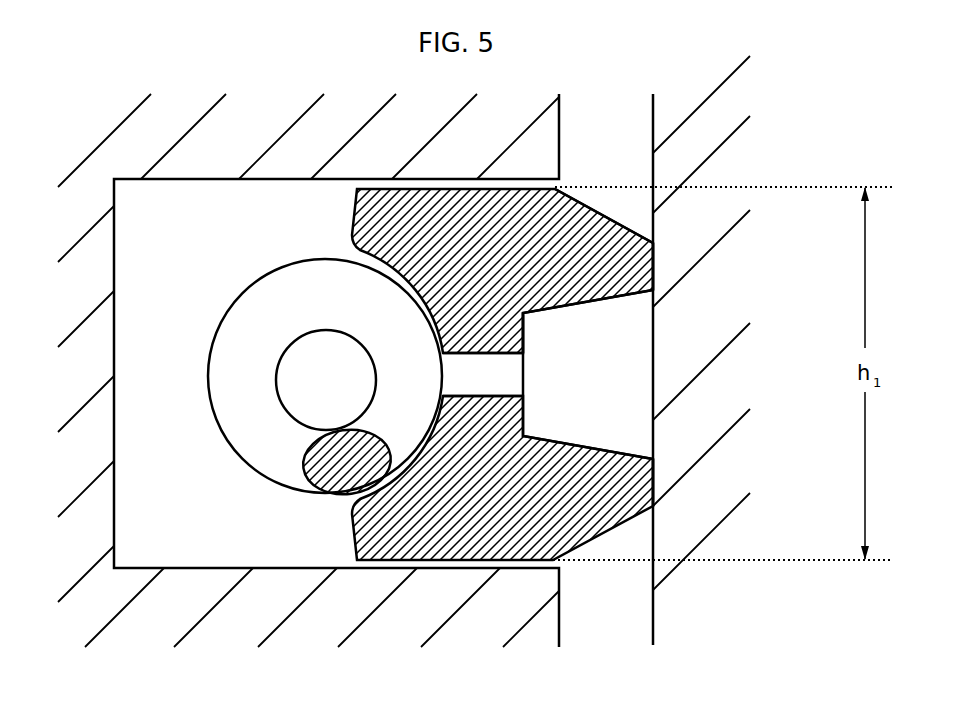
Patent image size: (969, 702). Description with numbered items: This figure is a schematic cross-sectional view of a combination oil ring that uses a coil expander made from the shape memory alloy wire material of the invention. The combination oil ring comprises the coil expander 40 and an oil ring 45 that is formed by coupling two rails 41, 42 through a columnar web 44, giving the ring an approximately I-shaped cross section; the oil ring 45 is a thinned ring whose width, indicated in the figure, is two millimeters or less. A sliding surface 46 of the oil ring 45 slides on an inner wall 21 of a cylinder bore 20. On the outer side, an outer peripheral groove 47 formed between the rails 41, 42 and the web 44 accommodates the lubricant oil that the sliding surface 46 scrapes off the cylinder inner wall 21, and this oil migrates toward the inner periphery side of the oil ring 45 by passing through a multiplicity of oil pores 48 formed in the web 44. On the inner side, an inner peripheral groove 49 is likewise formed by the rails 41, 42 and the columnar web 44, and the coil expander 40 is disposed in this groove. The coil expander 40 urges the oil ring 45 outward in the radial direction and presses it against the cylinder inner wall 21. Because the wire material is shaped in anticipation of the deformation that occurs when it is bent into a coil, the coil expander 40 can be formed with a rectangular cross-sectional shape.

The cylinder bore 20 is at (688, 358).
The inner wall 21 is at (646, 406).
The coil expander 40 is at (262, 328).
The rail 41 is at (383, 216).
The rail 42 is at (364, 548).
The columnar web 44 is at (488, 342).
The oil ring 45 is at (572, 192).
The sliding surface 46 is at (653, 263).
The outer peripheral groove 47 is at (558, 378).
The oil pores 48 is at (495, 387).
The inner peripheral groove 49 is at (380, 260).